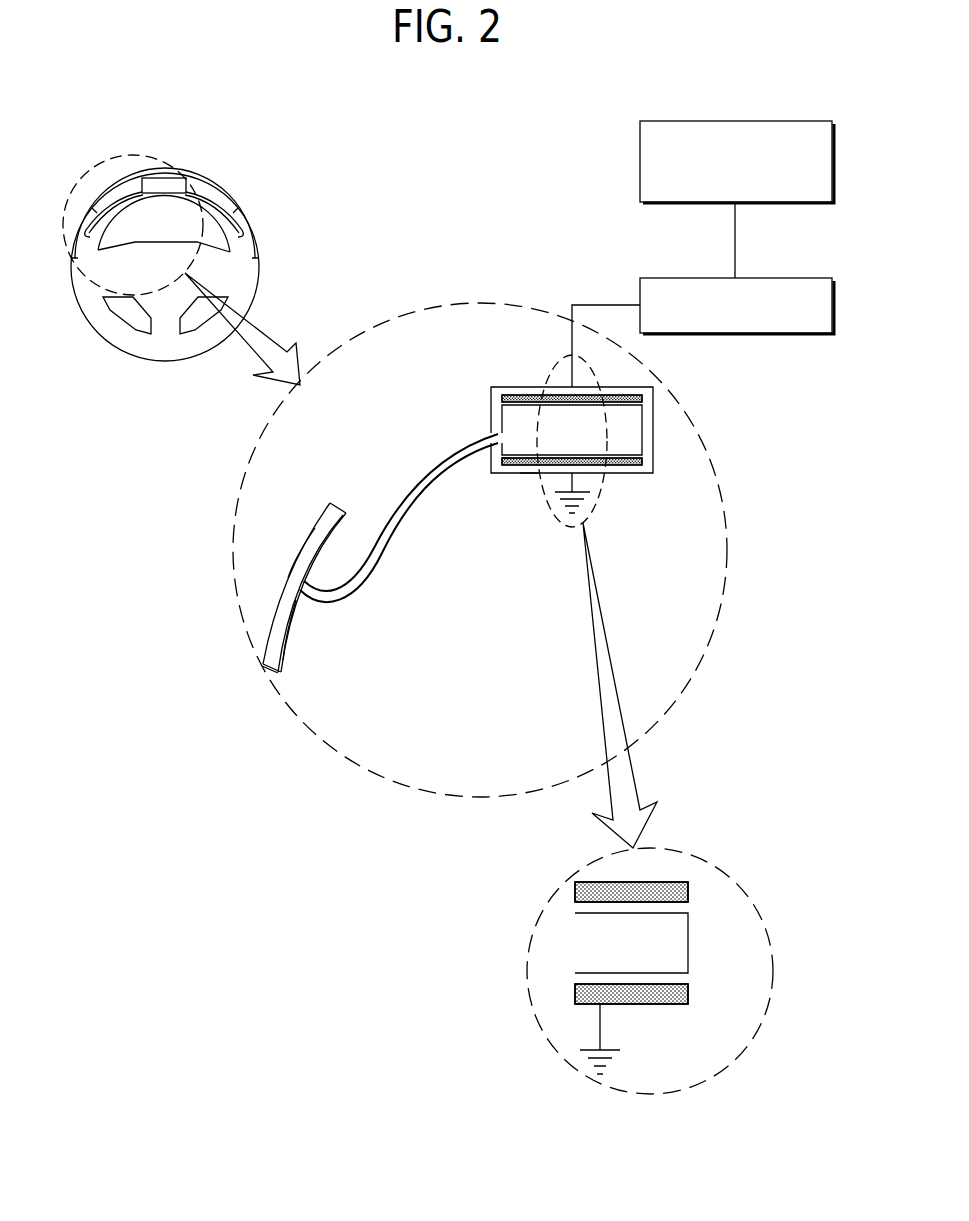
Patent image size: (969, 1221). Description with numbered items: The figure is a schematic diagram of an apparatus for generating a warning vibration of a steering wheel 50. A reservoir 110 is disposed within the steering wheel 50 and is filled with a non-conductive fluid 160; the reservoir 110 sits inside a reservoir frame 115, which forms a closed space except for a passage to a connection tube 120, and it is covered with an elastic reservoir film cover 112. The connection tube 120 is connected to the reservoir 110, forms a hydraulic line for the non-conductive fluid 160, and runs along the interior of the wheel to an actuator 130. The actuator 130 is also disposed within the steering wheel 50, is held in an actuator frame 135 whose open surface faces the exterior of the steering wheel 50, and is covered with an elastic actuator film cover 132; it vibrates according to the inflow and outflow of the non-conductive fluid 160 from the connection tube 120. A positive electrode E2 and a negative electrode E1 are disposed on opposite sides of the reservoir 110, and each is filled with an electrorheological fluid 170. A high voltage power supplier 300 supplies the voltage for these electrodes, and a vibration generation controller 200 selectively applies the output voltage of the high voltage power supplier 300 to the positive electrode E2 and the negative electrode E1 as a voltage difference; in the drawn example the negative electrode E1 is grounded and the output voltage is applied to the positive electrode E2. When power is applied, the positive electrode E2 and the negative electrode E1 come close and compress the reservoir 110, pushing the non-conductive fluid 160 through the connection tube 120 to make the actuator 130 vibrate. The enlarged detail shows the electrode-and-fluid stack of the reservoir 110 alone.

The steering wheel 50 is at (137, 362).
The reservoir 110 is at (652, 430).
The reservoir film cover 112 is at (510, 462).
The reservoir frame 115 is at (530, 474).
The connection tube 120 is at (398, 537).
The actuator 130 is at (293, 652).
The actuator film cover 132 is at (290, 575).
The actuator frame 135 is at (295, 618).
The non-conductive fluid 160 is at (510, 428).
The electrorheological fluid 170 is at (670, 882).
The negative electrode E1 is at (640, 465).
The positive electrode E2 is at (640, 398).
The vibration generation controller 200 is at (660, 278).
The high voltage power supplier 300 is at (640, 160).